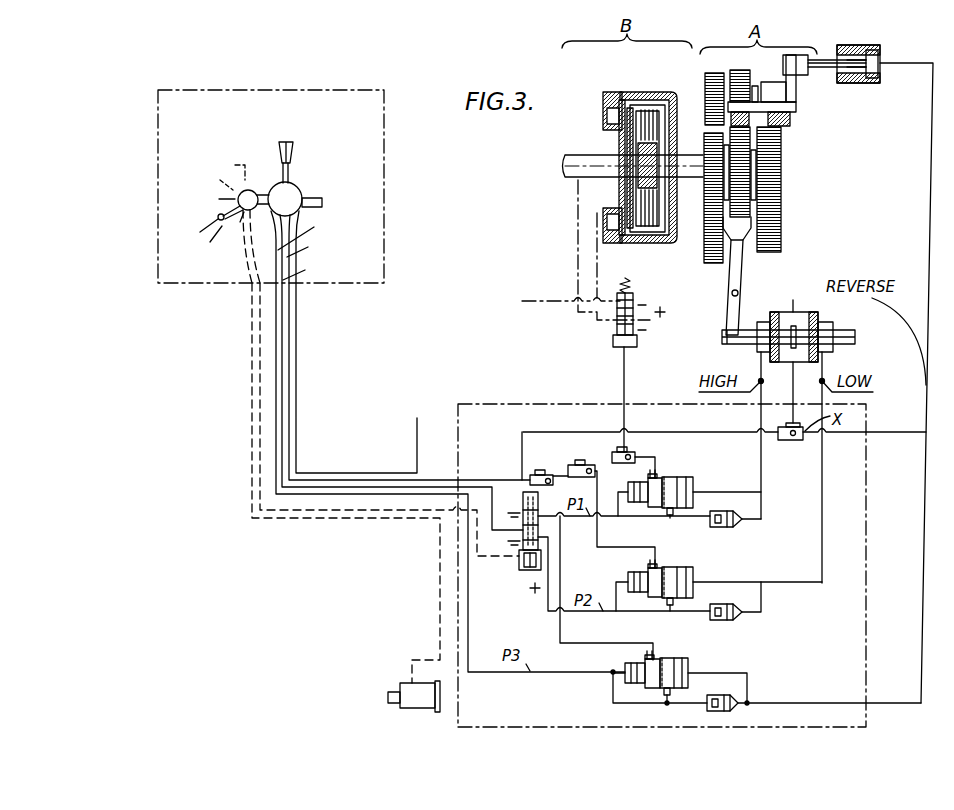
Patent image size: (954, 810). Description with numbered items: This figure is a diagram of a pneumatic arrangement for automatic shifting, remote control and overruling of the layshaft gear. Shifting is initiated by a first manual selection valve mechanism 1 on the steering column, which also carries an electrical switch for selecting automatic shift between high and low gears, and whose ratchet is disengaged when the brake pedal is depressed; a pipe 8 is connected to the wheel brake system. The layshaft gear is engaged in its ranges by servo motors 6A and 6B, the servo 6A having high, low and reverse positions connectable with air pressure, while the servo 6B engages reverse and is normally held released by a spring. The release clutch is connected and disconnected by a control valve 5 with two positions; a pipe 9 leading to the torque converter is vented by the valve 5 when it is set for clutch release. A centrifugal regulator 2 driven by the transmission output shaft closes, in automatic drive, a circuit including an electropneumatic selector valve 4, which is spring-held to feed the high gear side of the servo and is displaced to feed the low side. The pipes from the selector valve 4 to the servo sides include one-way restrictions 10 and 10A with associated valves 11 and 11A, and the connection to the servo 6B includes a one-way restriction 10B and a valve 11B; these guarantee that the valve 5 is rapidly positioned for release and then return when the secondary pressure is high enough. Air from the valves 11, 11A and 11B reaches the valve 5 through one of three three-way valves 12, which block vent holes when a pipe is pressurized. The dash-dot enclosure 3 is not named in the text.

The manual selection valve mechanism 1 is at (384, 143).
The centrifugal regulator 2 is at (410, 688).
The hydraulic control unit 3 is at (458, 425).
The electropneumatic selector valve 4 is at (519, 562).
The control valve 5 is at (613, 336).
The servo motor 6A is at (812, 322).
The servo motor 6B is at (862, 83).
The pipe 8 is at (415, 443).
The pipe 9 is at (536, 303).
The one-way restriction 10 is at (738, 528).
The one-way restriction 10A is at (725, 603).
The one-way restriction 10B is at (740, 710).
The valve 11 is at (677, 476).
The valve 11A is at (670, 567).
The valve 11B is at (683, 663).
The three-way valve 12 is at (615, 452).